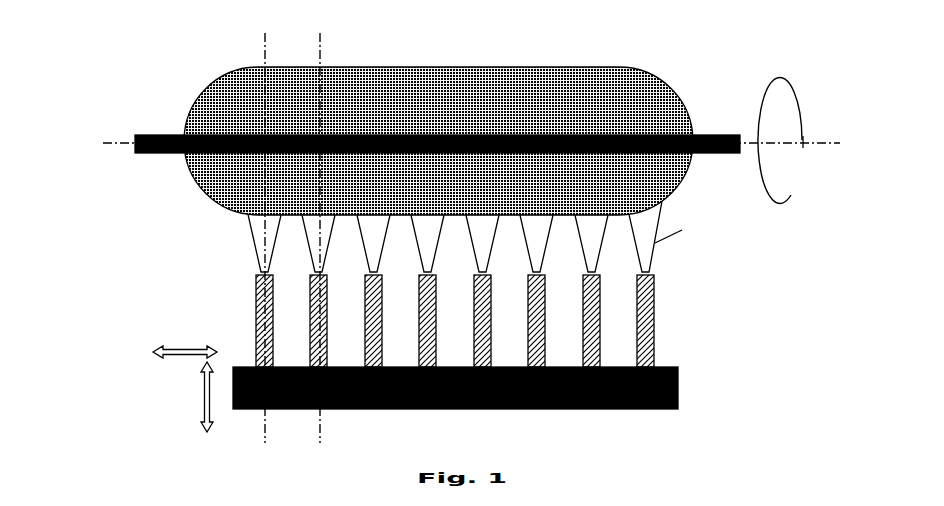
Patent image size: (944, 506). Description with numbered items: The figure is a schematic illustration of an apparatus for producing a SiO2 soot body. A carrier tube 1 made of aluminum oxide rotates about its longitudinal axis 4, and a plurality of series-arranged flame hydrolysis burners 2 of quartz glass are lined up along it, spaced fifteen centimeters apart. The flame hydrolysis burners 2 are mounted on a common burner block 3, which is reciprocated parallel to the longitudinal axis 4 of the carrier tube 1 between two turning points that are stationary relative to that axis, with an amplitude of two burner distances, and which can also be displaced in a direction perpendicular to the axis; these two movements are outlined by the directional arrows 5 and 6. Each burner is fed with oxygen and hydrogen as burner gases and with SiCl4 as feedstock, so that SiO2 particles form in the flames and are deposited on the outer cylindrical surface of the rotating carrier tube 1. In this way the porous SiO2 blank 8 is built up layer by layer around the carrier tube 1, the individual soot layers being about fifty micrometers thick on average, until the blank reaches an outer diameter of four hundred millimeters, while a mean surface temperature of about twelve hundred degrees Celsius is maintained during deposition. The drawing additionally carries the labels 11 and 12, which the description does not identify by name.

The carrier tube 1 is at (710, 135).
The flame hydrolysis burners 2 is at (655, 311).
The burner block 3 is at (425, 408).
The longitudinal axis 4 is at (827, 143).
The directional arrow 5 is at (182, 348).
The directional arrow 6 is at (205, 402).
The porous SiO2 blank 8 is at (321, 51).
The body material (dotted fill) 11 is at (558, 103).
The rotating body 12 is at (460, 61).